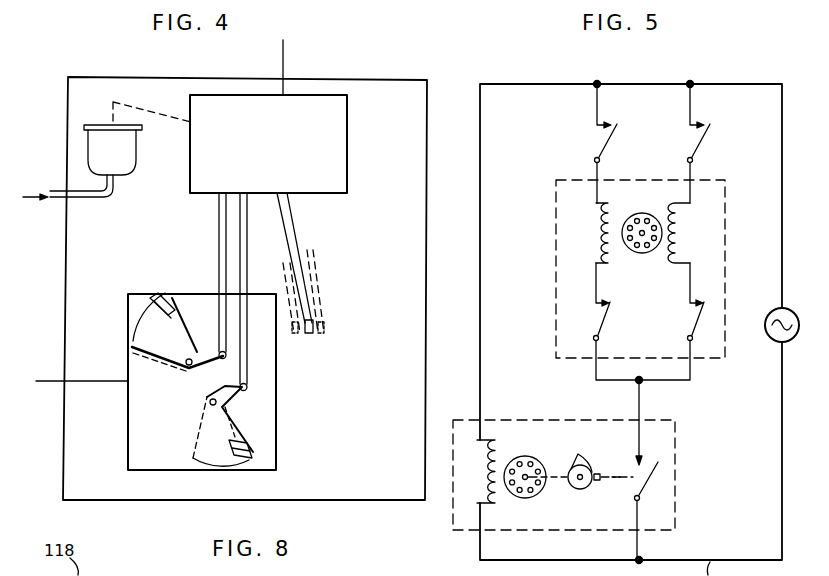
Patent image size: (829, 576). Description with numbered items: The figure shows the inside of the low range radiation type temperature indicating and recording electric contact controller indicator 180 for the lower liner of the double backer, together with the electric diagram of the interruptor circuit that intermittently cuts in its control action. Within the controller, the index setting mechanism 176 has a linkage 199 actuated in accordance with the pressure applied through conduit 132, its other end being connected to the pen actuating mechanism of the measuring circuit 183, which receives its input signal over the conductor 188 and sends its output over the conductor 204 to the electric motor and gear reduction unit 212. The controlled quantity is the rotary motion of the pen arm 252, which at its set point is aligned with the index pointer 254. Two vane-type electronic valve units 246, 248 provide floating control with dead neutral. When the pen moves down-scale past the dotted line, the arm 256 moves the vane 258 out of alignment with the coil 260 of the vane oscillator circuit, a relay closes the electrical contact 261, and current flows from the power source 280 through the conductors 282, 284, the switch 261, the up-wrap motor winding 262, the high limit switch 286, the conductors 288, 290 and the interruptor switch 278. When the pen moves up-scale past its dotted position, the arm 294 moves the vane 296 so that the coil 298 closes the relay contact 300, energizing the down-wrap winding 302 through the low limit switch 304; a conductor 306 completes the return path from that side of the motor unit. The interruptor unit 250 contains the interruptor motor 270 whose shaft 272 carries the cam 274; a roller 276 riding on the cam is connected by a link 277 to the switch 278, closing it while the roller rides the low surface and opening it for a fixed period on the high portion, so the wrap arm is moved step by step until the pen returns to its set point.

In FIG. 4, the low range radiation type temperature indicating and recording electric contact c 180 is at (118, 76).
In FIG. 4, the measuring circuit 183 is at (333, 148).
In FIG. 4, the conductor 188 is at (283, 52).
In FIG. 4, the linkage 199 is at (157, 110).
In FIG. 4, the index setting mechanism 176 is at (122, 151).
In FIG. 4, the conduit 132 is at (50, 199).
In FIG. 4, the conductor 204 is at (49, 383).
In FIG. 4, the electronic valve unit 246 is at (116, 337).
In FIG. 4, the electronic valve unit 248 is at (178, 446).
In FIG. 4, the pen arm 252 is at (313, 327).
In FIG. 4, the index pointer 254 is at (290, 233).
In FIG. 4, the arm 256 is at (218, 225).
In FIG. 4, the vane 258 is at (140, 330).
In FIG. 4, the coil 260 is at (159, 294).
In FIG. 4, the arm 294 is at (249, 366).
In FIG. 4, the vane 296 is at (219, 424).
In FIG. 4, the coil 298 is at (248, 465).
In FIG. 5, the power source 280 is at (773, 308).
In FIG. 5, the conductor 282 is at (649, 84).
In FIG. 5, the conductor 284 is at (595, 100).
In FIG. 5, the electrical contact 261 is at (606, 140).
In FIG. 5, the contact 300 is at (700, 142).
In FIG. 5, the electric motor and gear reduction unit 212 is at (715, 166).
In FIG. 5, the motor winding 262 is at (603, 228).
In FIG. 5, the motor winding 302 is at (682, 230).
In FIG. 5, the low limit switch 304 is at (694, 298).
In FIG. 5, the high limit switch 286 is at (602, 303).
In FIG. 5, the conductor 288 is at (592, 370).
In FIG. 5, the lead 306 is at (692, 372).
In FIG. 5, the conductor 290 is at (644, 402).
In FIG. 5, the switch 278 is at (660, 464).
In FIG. 5, the interruptor unit 250 is at (448, 527).
In FIG. 5, the interruptor motor 270 is at (523, 455).
In FIG. 5, the shaft 272 is at (553, 474).
In FIG. 5, the cam 274 is at (587, 470).
In FIG. 5, the roller 276 is at (596, 482).
In FIG. 5, the link 277 is at (620, 479).